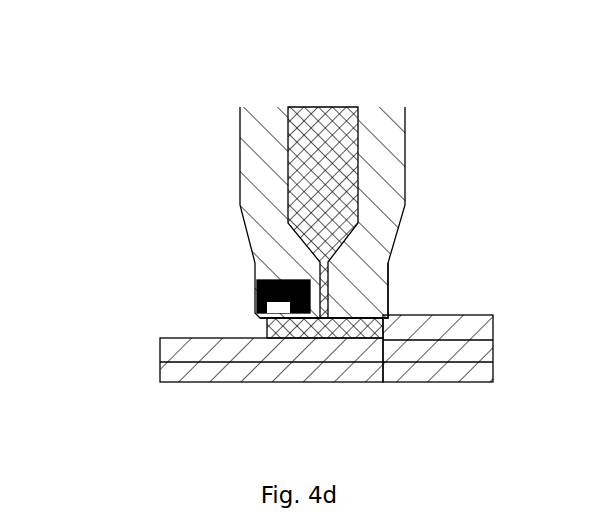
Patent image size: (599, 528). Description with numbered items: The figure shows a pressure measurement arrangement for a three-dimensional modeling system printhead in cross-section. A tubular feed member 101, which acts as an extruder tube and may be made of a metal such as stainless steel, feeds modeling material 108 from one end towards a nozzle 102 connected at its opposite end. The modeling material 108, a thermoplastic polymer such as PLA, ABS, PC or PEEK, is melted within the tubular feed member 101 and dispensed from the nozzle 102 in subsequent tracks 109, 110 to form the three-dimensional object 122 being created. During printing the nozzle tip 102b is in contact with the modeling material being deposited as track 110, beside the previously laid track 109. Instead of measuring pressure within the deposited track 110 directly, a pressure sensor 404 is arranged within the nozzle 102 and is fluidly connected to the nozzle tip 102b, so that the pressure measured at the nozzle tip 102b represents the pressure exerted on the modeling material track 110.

The tubular feed member 101 is at (393, 151).
The modeling material 108 is at (319, 107).
The nozzle 102 is at (390, 288).
The pressure sensor 404 is at (242, 275).
The deposited track 110 is at (287, 303).
The nozzle tip 102b is at (300, 341).
The three-dimensional object 122 is at (191, 333).
The track 109 is at (434, 388).